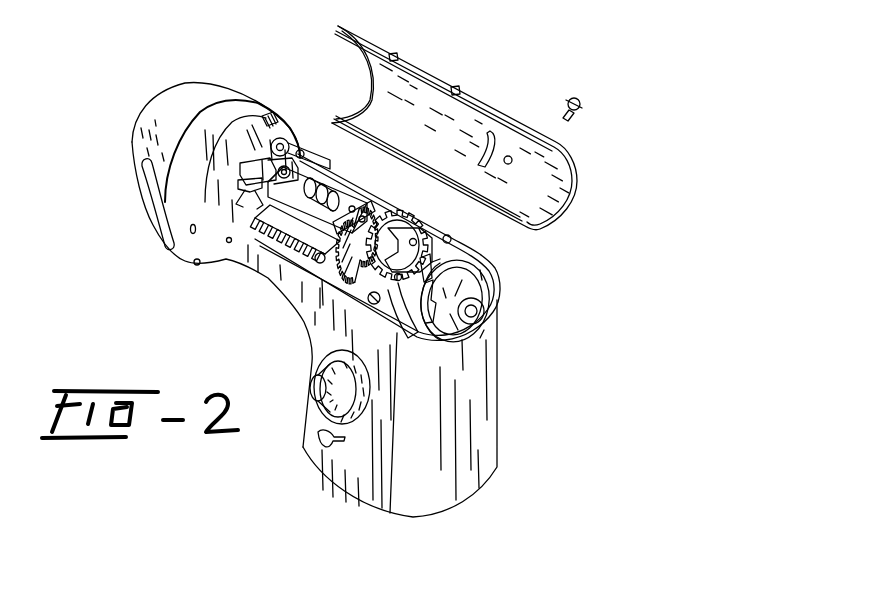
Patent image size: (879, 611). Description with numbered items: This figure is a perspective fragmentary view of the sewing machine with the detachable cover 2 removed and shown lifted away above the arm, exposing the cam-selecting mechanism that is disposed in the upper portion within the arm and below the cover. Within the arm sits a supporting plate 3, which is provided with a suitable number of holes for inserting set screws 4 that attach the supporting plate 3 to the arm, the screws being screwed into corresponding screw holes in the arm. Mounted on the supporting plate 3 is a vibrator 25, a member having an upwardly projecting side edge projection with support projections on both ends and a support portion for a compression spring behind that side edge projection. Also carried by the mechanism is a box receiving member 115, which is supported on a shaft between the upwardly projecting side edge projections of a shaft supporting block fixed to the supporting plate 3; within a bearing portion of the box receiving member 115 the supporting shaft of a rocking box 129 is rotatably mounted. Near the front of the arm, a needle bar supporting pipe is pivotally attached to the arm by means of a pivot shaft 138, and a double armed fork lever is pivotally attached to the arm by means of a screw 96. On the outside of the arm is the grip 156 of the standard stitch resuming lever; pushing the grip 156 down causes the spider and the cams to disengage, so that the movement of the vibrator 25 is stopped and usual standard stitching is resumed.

The detachable cover 2 is at (473, 113).
The supporting plate 3 is at (501, 289).
The set screw 4 is at (304, 155).
The vibrator 25 is at (290, 252).
The screw 96 is at (229, 244).
The box receiving member 115 is at (265, 167).
The rocking box 129 is at (247, 181).
The pivot shaft 138 is at (188, 231).
The grip 156 is at (315, 240).